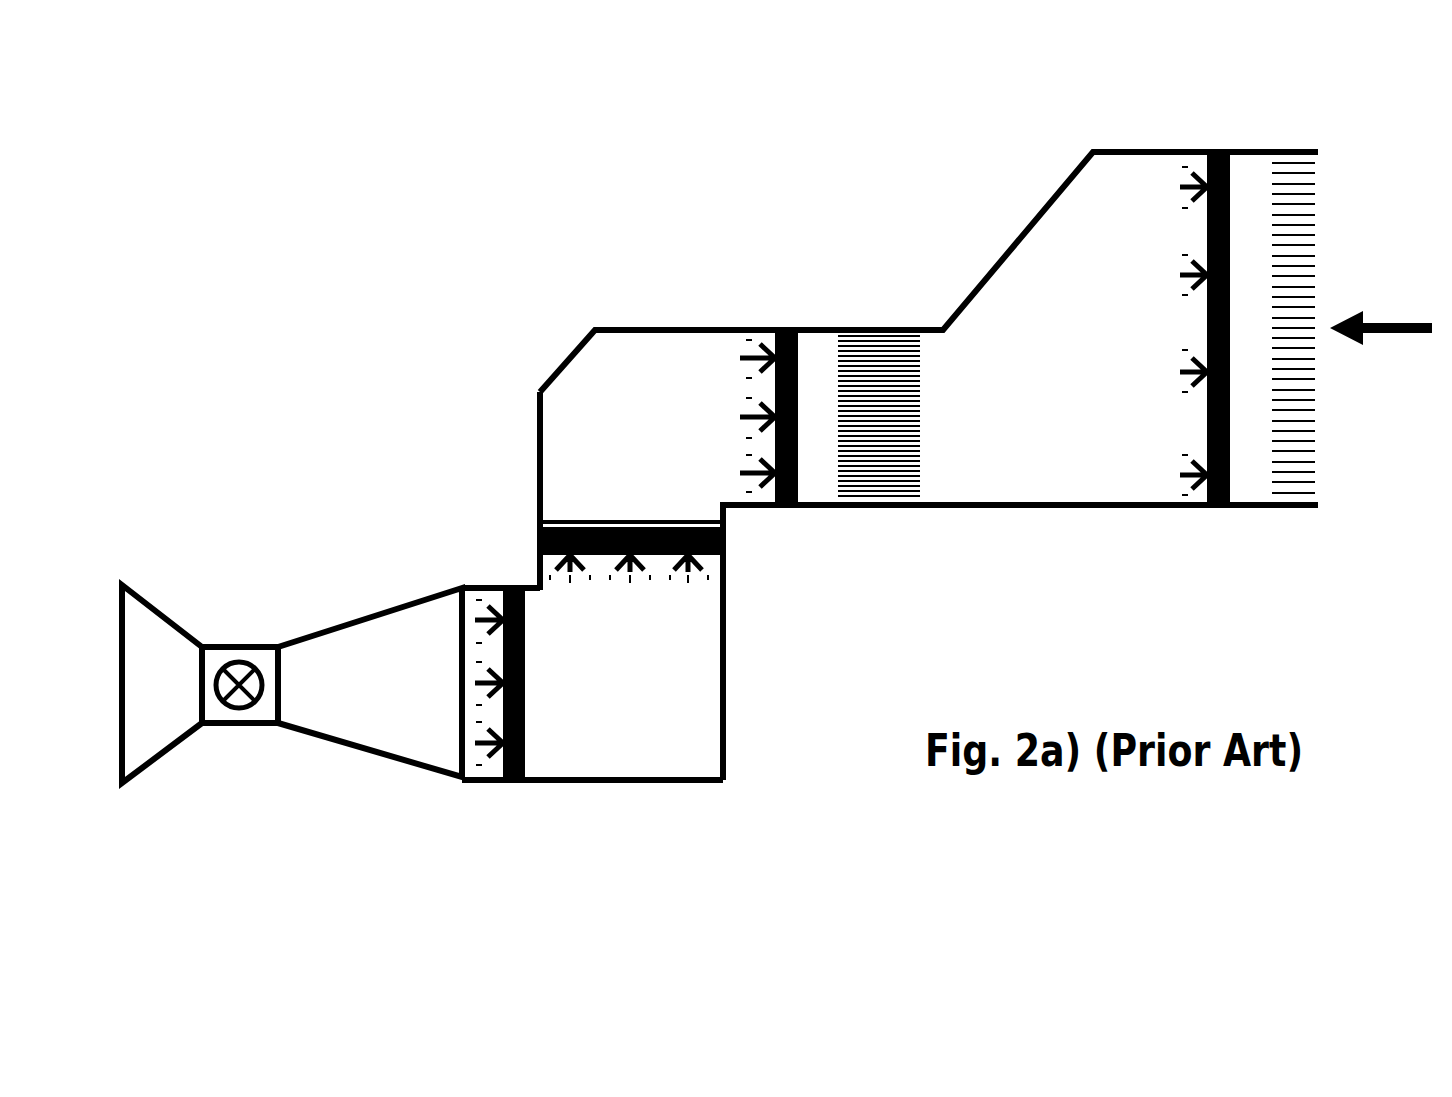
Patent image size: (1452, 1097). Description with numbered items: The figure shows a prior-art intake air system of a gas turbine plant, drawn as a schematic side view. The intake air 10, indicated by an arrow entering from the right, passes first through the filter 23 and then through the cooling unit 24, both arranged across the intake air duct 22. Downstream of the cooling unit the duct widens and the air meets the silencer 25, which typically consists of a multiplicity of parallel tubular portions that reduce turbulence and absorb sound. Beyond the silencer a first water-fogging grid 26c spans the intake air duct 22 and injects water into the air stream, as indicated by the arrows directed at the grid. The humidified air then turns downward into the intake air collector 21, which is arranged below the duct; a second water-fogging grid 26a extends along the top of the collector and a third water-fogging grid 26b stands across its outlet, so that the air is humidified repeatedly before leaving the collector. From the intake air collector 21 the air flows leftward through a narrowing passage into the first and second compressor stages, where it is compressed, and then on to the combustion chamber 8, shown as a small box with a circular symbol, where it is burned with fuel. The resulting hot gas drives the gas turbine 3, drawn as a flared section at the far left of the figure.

The gas turbine 3 is at (153, 697).
The combustion chamber 8 is at (235, 663).
The intake air 10 is at (1386, 354).
The intake air collector 21 is at (730, 540).
The intake air duct 22 is at (513, 137).
The filter 23 is at (1297, 478).
The cooling unit 24 is at (1208, 505).
The silencer 25 is at (858, 477).
The water-fogging grid 26a is at (545, 547).
The water-fogging grid 26b is at (512, 780).
The water-fogging grid 26c is at (777, 330).